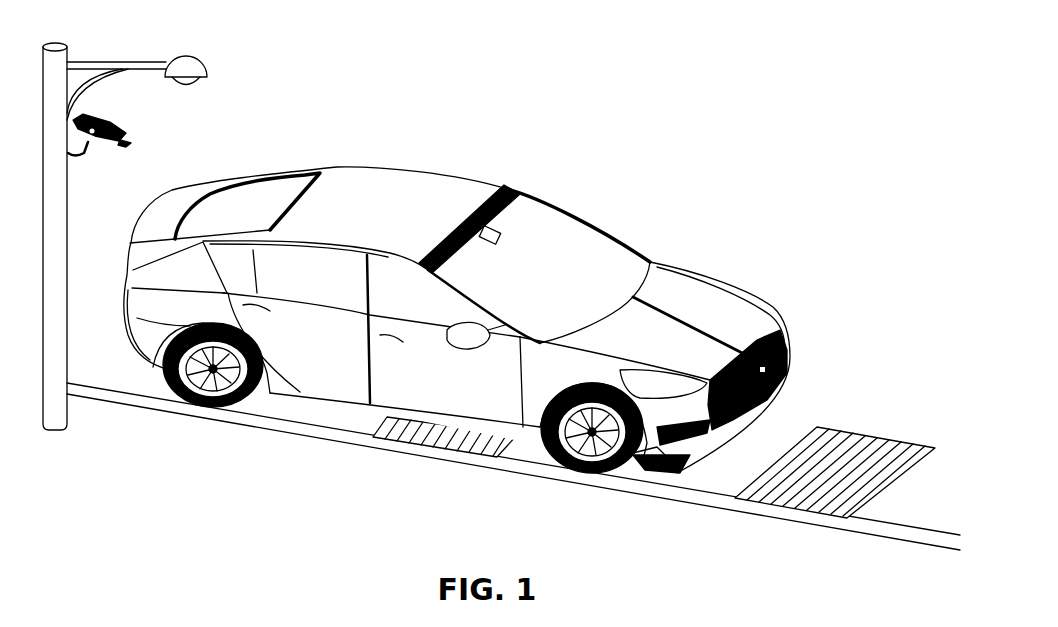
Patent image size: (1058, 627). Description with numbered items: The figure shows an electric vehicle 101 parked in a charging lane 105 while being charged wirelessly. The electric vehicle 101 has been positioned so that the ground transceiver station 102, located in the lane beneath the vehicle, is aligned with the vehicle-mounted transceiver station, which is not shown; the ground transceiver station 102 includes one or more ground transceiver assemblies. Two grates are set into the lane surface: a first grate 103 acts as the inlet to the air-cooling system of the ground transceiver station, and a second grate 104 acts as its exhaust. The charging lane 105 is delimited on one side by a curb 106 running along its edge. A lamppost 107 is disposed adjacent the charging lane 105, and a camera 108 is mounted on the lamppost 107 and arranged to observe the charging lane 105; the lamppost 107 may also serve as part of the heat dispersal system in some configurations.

The electric vehicle 101 is at (397, 207).
The ground transceiver station 102 is at (678, 474).
The first grate 103 is at (384, 422).
The second grate 104 is at (885, 495).
The charging lane 105 is at (893, 328).
The curb 106 is at (150, 407).
The lamppost 107 is at (125, 228).
The camera 108 is at (99, 144).